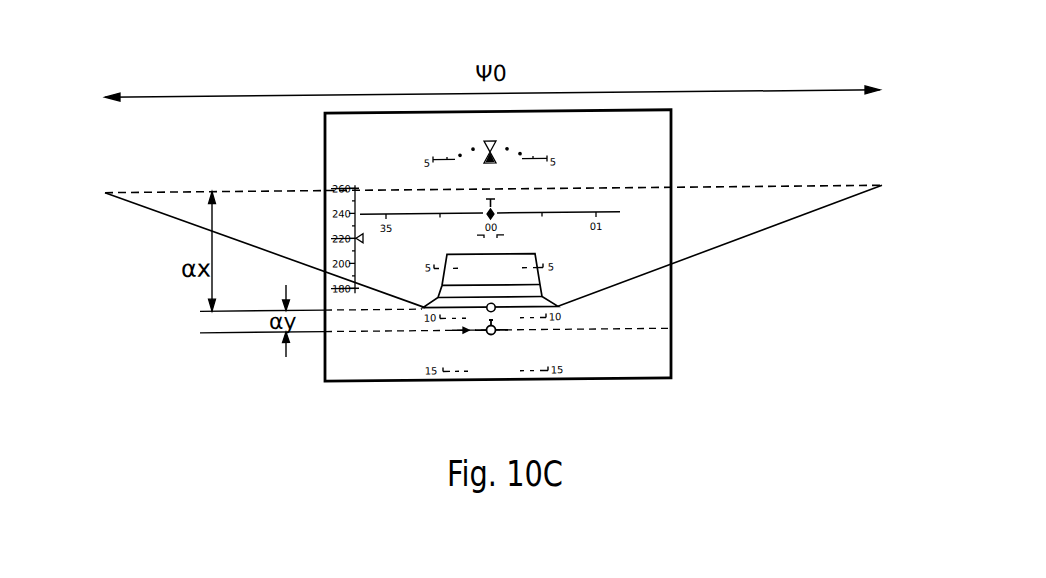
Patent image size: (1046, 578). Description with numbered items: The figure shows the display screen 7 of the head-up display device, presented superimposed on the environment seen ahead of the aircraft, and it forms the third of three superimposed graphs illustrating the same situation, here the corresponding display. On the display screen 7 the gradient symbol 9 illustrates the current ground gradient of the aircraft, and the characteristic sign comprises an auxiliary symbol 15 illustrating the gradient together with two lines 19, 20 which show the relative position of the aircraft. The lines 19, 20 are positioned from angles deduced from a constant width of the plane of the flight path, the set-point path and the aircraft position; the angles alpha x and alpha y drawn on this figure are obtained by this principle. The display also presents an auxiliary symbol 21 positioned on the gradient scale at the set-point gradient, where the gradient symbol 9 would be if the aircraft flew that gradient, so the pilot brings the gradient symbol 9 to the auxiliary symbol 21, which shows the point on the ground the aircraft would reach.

The display screen 7 is at (640, 380).
The gradient symbol 9 is at (490, 336).
The auxiliary symbol 15 is at (513, 313).
The line 19 is at (376, 290).
The line 20 is at (648, 274).
The auxiliary symbol 21 is at (487, 311).